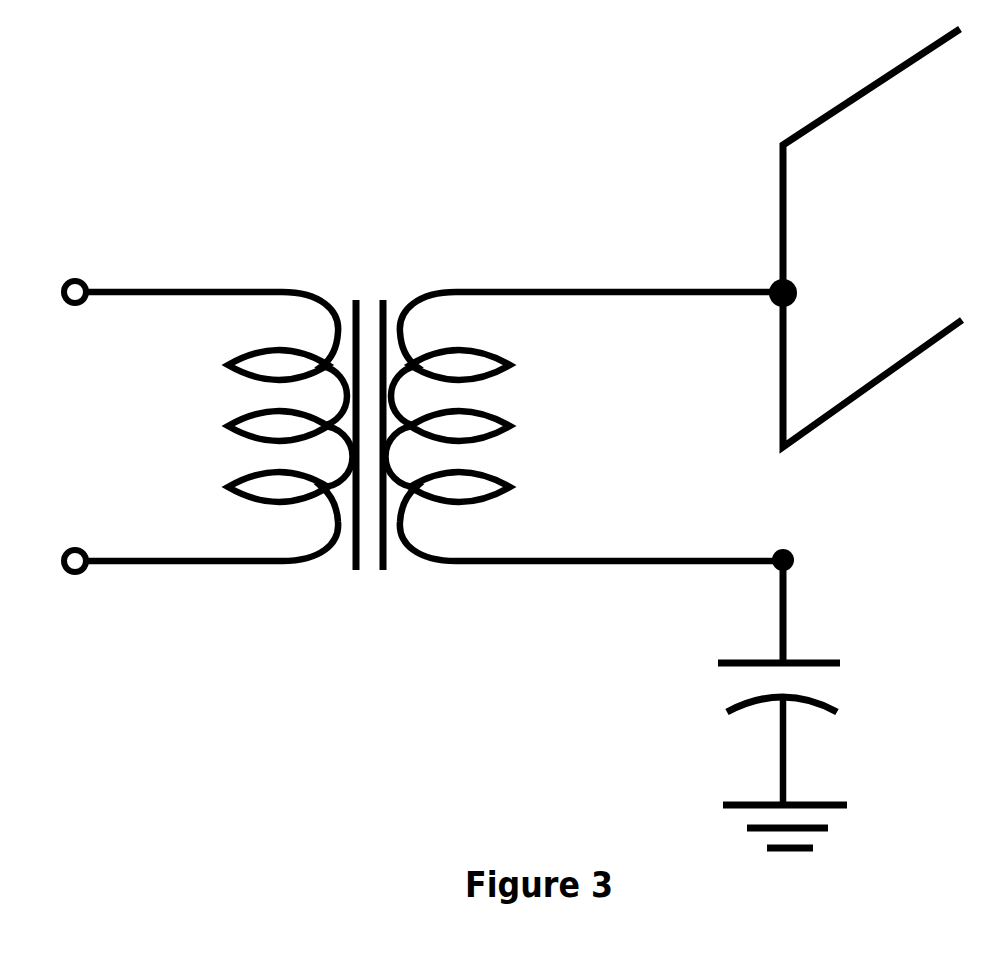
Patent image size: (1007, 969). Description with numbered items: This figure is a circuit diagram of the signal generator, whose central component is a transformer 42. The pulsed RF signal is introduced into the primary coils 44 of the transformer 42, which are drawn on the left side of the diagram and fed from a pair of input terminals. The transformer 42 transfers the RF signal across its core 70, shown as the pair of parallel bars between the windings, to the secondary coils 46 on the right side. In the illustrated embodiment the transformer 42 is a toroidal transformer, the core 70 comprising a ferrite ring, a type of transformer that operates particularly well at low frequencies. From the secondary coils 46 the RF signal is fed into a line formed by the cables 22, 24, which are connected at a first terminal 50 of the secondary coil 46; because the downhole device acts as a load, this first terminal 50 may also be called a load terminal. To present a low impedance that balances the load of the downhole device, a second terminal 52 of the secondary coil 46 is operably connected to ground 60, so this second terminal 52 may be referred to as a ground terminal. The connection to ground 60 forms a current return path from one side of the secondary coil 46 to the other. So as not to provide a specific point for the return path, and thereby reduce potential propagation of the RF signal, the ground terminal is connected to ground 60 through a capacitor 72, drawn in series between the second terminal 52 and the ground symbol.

The cable 22 is at (875, 85).
The cable 24 is at (927, 350).
The transformer 42 is at (323, 620).
The primary coils 44 is at (253, 378).
The secondary coils 46 is at (493, 433).
The first terminal 50 is at (775, 285).
The second terminal 52 is at (792, 566).
The ground 60 is at (747, 802).
The core 70 is at (352, 302).
The capacitor 72 is at (735, 660).